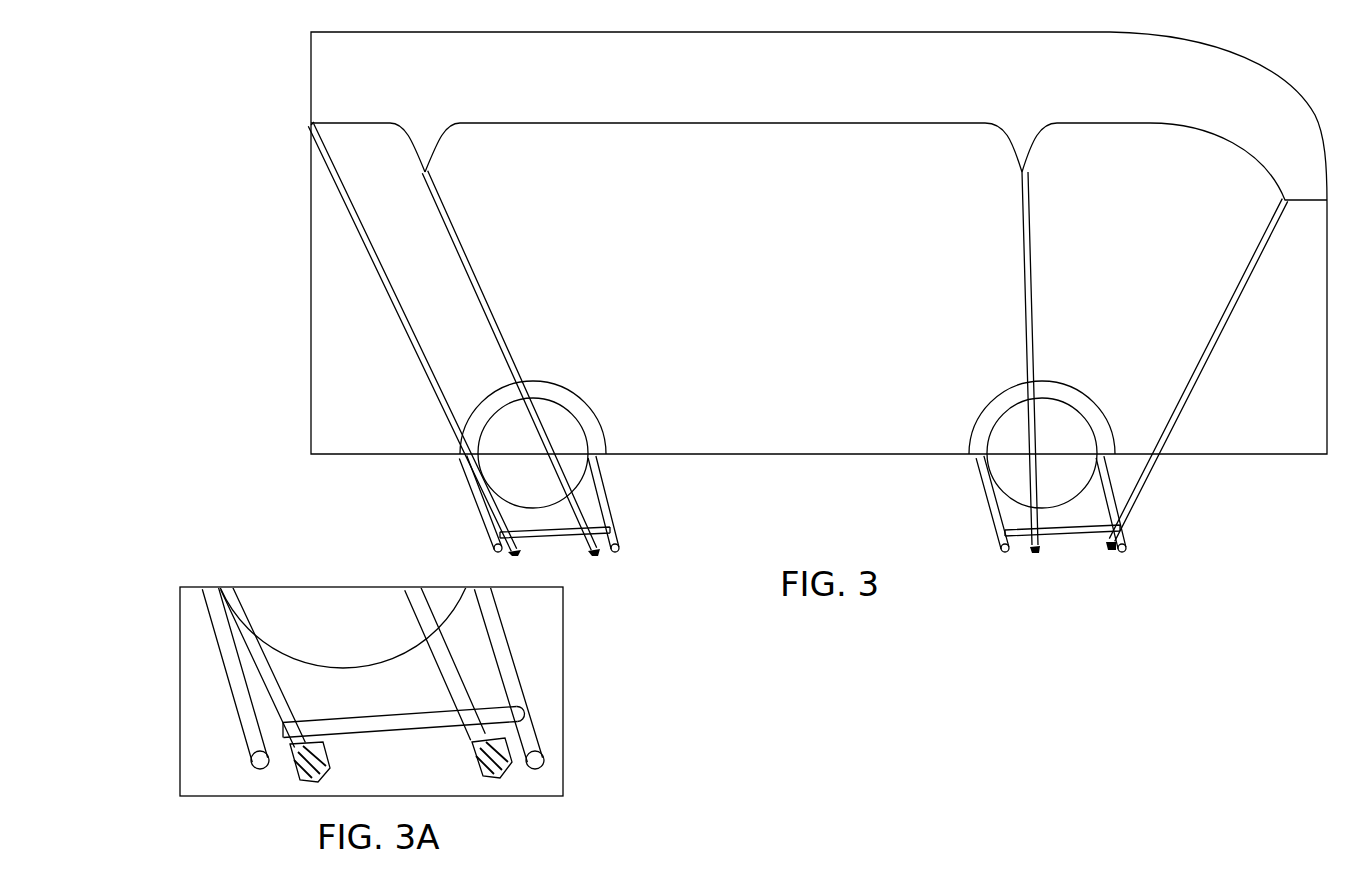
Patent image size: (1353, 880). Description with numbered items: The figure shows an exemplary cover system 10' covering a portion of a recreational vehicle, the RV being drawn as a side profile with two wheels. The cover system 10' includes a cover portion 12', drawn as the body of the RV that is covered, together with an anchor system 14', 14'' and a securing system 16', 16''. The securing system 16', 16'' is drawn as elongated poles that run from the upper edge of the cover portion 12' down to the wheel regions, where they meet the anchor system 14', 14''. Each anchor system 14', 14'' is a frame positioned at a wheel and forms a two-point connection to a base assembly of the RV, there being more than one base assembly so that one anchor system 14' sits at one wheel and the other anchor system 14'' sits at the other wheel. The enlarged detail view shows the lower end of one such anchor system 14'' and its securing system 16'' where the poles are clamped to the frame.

The cover system 10' is at (782, 294).
The cover portion 12' is at (819, 270).
The anchor system 14' is at (1022, 504).
The anchor system 14'' is at (576, 504).
The securing system 16' is at (1119, 362).
The securing system 16'' is at (454, 339).